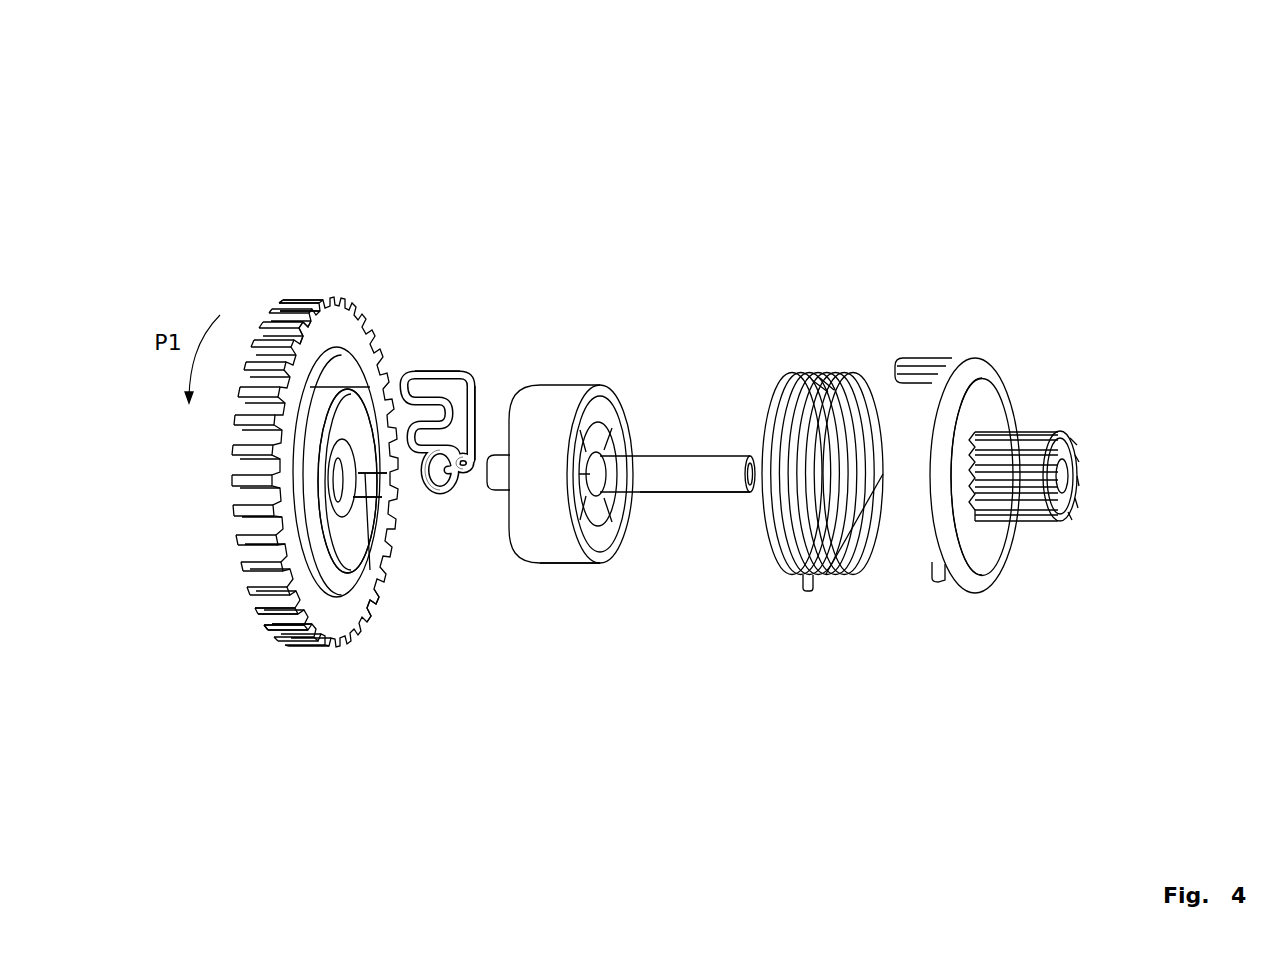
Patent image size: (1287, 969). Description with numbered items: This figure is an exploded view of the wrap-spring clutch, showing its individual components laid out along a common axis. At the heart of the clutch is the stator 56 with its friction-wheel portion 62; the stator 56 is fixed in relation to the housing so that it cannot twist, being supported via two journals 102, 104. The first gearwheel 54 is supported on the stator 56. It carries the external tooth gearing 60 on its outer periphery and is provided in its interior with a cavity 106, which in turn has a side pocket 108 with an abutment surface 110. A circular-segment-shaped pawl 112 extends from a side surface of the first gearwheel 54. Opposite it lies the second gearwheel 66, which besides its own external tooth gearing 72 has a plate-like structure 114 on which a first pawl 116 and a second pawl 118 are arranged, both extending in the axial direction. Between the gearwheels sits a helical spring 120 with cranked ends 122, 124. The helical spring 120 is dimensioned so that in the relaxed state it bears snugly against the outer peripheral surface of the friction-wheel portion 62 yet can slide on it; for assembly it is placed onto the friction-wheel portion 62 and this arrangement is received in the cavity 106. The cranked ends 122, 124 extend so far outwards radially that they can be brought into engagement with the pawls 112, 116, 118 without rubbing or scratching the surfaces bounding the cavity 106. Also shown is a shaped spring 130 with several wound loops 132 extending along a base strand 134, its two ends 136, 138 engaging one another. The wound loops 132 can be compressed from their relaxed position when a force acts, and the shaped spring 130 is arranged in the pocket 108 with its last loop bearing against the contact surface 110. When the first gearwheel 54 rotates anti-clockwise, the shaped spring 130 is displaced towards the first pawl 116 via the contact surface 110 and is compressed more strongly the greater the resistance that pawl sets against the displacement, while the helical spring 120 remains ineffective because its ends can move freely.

The first gearwheel 54 is at (305, 642).
The external tooth gearing 60 is at (300, 298).
The circular-segment-shaped pawl 112 is at (262, 609).
The abutment surface 110 is at (362, 590).
The cavity 106 is at (370, 443).
The side pocket 108 is at (379, 468).
The shaped spring 130 is at (447, 372).
The wound loops 132 is at (434, 368).
The base strand 134 is at (478, 425).
The first end of shaped spring 136 is at (450, 493).
The second end of shaped spring 138 is at (473, 482).
The journal 102 is at (495, 452).
The friction-wheel portion 62 is at (553, 545).
The journal 104 is at (710, 455).
The stator 56 is at (675, 490).
The cranked end 122 is at (815, 375).
The cranked end 124 is at (806, 592).
The helical spring 120 is at (858, 567).
The second gearwheel 66 is at (977, 361).
The first pawl 116 is at (924, 380).
The second pawl 118 is at (938, 582).
The plate-like structure 114 is at (997, 540).
The external tooth gearing 72 is at (1042, 465).